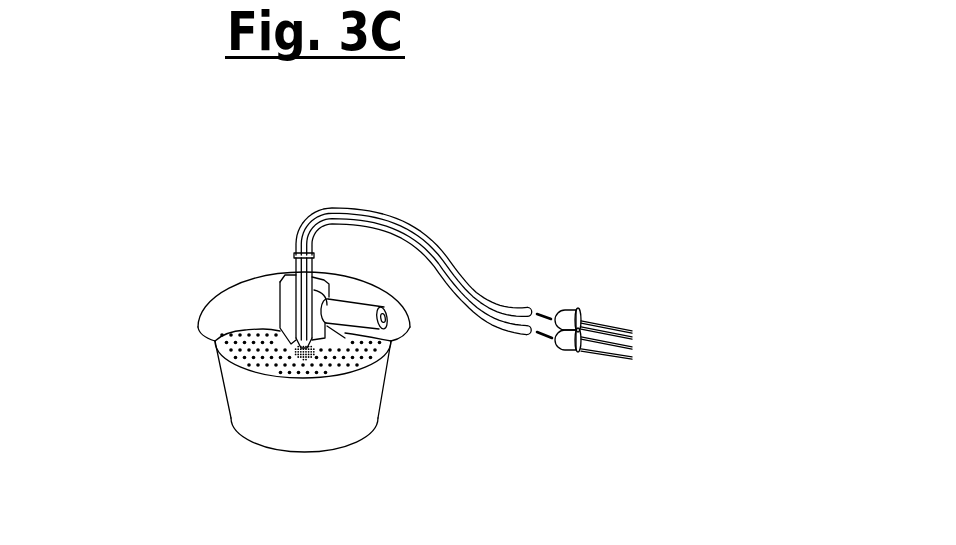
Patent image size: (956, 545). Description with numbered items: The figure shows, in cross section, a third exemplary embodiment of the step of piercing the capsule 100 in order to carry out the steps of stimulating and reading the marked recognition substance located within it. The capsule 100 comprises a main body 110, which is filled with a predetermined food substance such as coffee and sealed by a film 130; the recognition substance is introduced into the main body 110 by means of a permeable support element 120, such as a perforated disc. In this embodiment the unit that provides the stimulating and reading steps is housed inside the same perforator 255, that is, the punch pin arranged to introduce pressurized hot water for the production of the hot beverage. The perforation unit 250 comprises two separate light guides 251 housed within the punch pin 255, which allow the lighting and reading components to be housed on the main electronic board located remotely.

The capsule 100 is at (182, 239).
The main body 110 is at (284, 406).
The perforated mesh base 120 is at (218, 343).
The film 130 is at (252, 303).
The perforation unit 250 is at (485, 195).
The light guides 251 is at (380, 199).
The perforator 255 is at (266, 244).